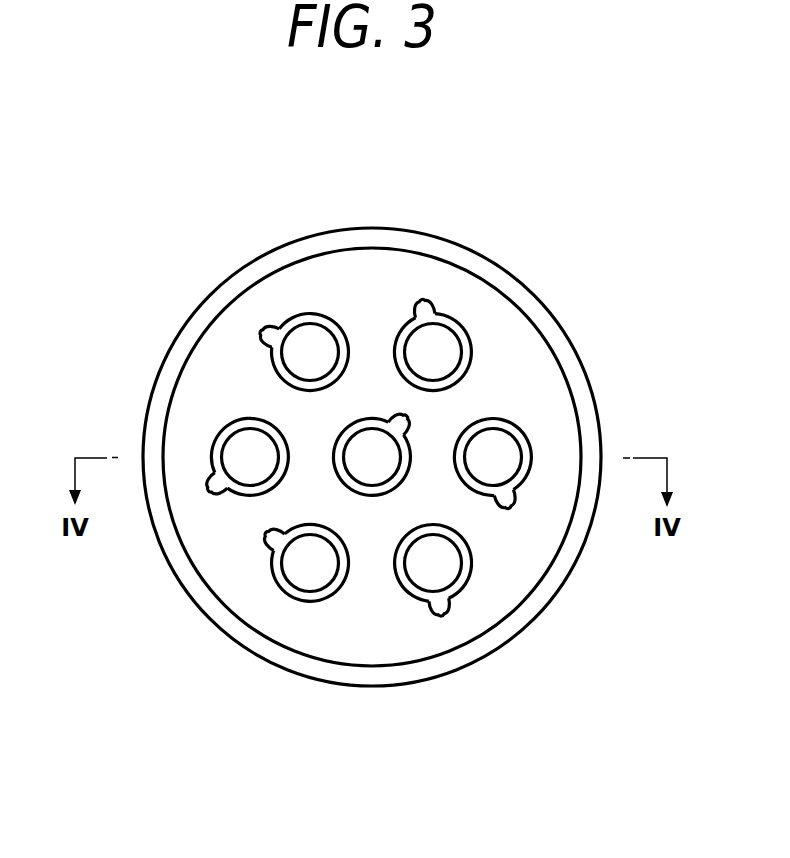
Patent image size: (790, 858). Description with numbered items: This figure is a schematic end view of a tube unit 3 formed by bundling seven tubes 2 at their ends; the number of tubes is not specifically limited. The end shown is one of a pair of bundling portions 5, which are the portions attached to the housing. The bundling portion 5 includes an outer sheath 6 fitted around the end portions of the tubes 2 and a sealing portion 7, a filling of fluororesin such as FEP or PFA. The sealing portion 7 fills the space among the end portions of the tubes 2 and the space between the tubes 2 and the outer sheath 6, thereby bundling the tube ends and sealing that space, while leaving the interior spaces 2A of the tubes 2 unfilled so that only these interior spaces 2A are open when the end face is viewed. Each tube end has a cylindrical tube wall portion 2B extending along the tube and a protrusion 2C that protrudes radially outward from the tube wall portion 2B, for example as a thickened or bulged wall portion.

The tube 2 is at (273, 573).
The interior space 2A is at (309, 580).
The tube wall portion 2B is at (337, 583).
The protrusion 2C is at (272, 540).
The tube unit 3 is at (575, 205).
The bundling portion 5 is at (367, 228).
The outer sheath 6 is at (333, 242).
The sealing portion 7 is at (308, 282).